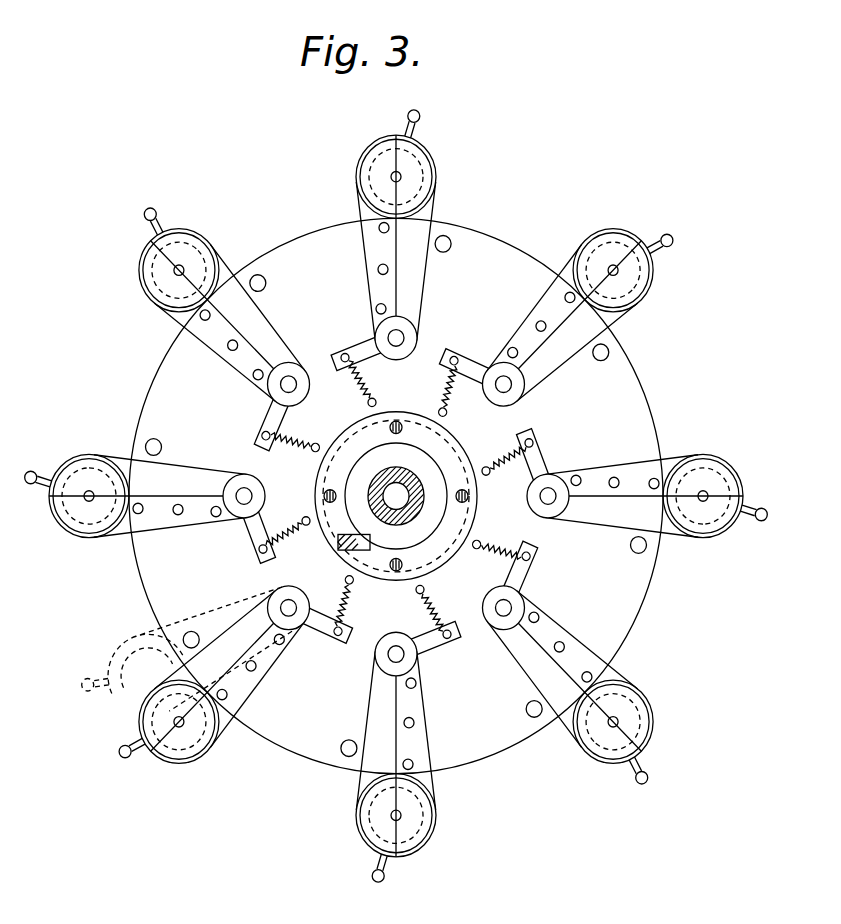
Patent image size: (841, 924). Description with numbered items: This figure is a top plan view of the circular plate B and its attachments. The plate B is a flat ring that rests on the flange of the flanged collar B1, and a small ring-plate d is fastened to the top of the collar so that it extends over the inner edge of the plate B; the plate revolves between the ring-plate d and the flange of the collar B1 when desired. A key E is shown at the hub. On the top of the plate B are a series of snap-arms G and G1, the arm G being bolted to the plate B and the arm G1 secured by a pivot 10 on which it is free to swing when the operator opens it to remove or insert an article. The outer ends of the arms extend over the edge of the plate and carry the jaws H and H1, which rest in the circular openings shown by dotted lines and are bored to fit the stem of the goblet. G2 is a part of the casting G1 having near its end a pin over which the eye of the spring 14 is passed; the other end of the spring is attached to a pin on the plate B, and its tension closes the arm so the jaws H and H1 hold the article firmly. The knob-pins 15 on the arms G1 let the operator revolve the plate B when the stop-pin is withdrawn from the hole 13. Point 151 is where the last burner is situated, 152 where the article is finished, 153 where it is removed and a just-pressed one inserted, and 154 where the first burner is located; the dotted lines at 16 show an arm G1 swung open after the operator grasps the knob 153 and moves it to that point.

The pivot pin 10 is at (396, 496).
The hole in the plate B 13 is at (452, 244).
The spring 14 is at (358, 378).
The knob-pins 15 is at (421, 117).
The point of the last burner 151 is at (153, 216).
The point where the article is finished 152 is at (31, 484).
The knob at removal and insertion point 153 is at (128, 758).
The point of the first burner 154 is at (378, 876).
The open position of arm G' 16 is at (96, 694).
The circular plate B is at (508, 243).
The flanged collar B1 is at (396, 496).
The ring-plate d is at (395, 508).
The key E is at (354, 543).
The snap-arm G is at (396, 496).
The hinged snap-arm G1 is at (396, 496).
The spring-attachment part of arm G' G2 is at (440, 648).
The jaw H is at (396, 496).
The jaw H1 is at (396, 496).